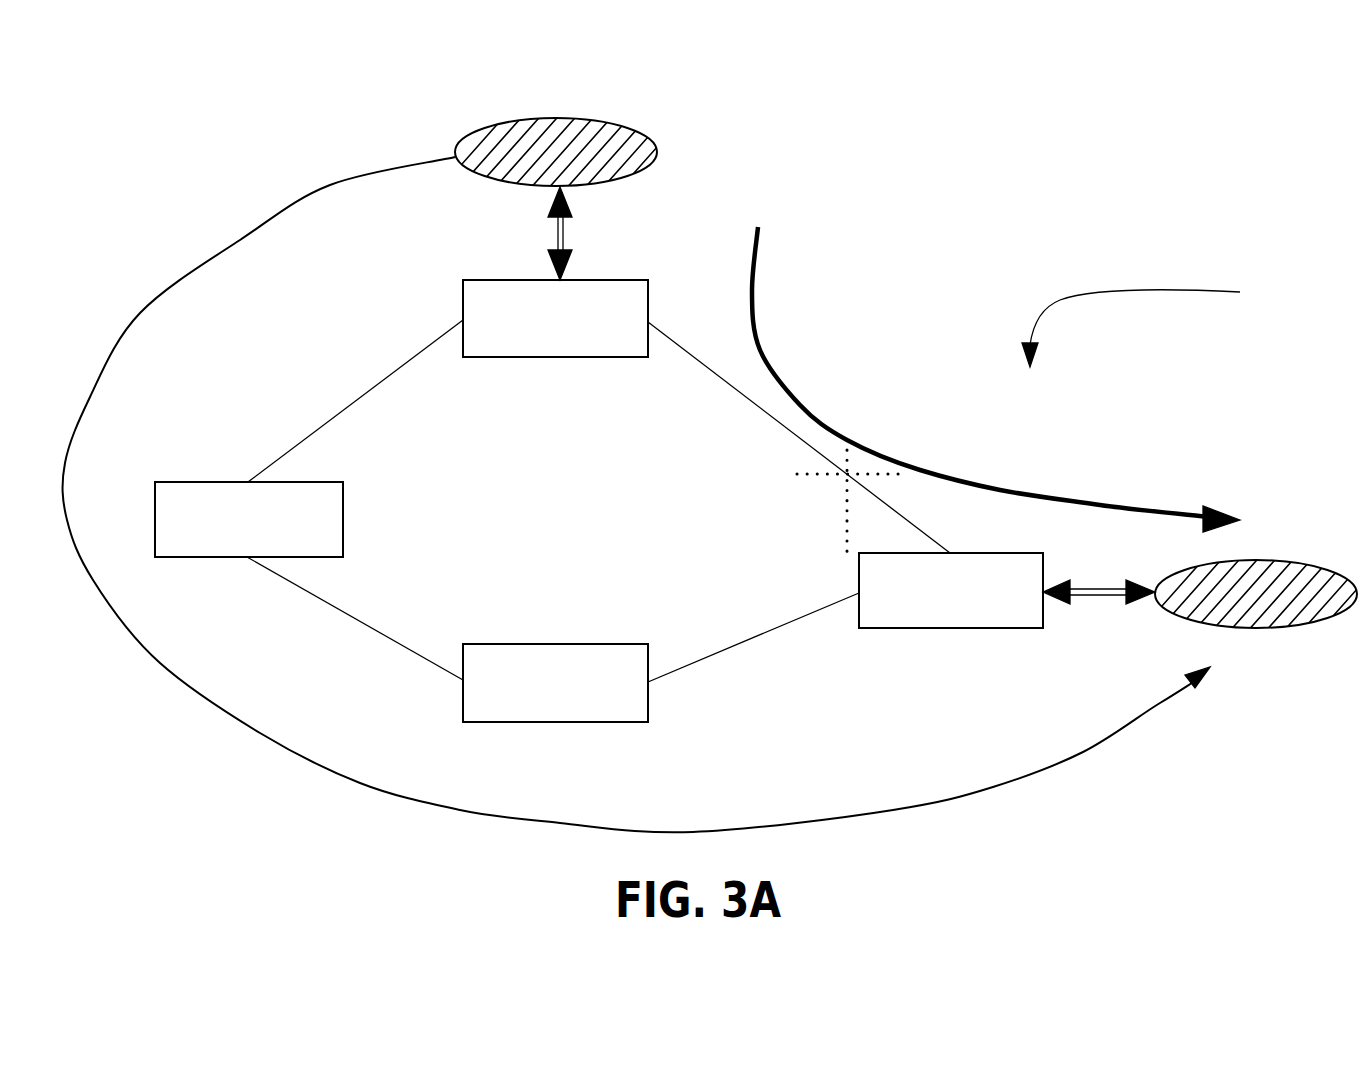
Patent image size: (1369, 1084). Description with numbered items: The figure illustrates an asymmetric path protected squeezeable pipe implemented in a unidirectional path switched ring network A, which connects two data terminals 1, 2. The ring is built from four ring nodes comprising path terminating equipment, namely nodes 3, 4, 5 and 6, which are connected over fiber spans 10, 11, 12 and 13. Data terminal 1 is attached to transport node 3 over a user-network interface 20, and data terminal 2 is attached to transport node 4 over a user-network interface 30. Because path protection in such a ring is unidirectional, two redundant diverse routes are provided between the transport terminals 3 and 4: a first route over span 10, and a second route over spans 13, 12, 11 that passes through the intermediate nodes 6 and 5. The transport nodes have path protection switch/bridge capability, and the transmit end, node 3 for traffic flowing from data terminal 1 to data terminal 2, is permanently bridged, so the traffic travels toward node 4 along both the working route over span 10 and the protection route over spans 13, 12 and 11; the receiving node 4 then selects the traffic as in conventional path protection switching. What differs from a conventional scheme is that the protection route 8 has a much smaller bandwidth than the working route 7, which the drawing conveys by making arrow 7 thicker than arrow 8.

The data terminal 1 is at (558, 118).
The data terminal 2 is at (1285, 560).
The ring node 3 is at (463, 298).
The ring node 4 is at (966, 628).
The ring node 5 is at (555, 722).
The ring node 6 is at (212, 482).
The route 7 is at (1022, 487).
The protection route 8 is at (1083, 752).
The fiber span 10 is at (755, 407).
The fiber span 11 is at (775, 663).
The fiber span 12 is at (355, 620).
The fiber span 13 is at (388, 373).
The user-network interface 20 is at (555, 232).
The user-network interface 30 is at (1093, 596).
The unidirectional path switched ring network A is at (1144, 322).